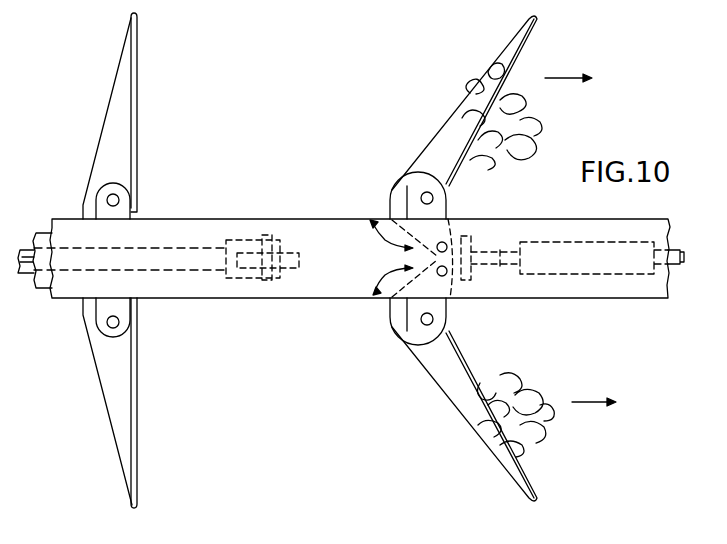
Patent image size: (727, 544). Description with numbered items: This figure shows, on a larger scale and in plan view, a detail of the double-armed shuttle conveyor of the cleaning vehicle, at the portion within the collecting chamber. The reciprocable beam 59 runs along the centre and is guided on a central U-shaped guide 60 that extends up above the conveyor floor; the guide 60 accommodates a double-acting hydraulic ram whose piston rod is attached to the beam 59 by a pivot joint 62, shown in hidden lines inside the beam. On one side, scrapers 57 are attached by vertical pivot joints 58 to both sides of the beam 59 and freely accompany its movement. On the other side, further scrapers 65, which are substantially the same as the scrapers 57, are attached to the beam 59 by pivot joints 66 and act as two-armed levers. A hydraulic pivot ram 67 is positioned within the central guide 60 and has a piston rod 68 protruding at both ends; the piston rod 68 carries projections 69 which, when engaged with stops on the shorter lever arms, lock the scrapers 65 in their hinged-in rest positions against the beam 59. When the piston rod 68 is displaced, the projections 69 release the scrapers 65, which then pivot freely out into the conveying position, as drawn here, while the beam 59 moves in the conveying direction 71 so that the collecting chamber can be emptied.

The scrapers 57 is at (125, 416).
The vertical pivot joints 58 is at (117, 322).
The reciprocable beam 59 is at (326, 291).
The central U-shaped guide 60 is at (42, 288).
The pivot joint 62 is at (262, 280).
The further scrapers 65 is at (472, 423).
The pivot joints 66 is at (422, 325).
The hydraulic pivot ram 67 is at (573, 275).
The piston rod 68 is at (500, 265).
The projections 69 is at (470, 280).
The conveying direction 71 is at (580, 229).